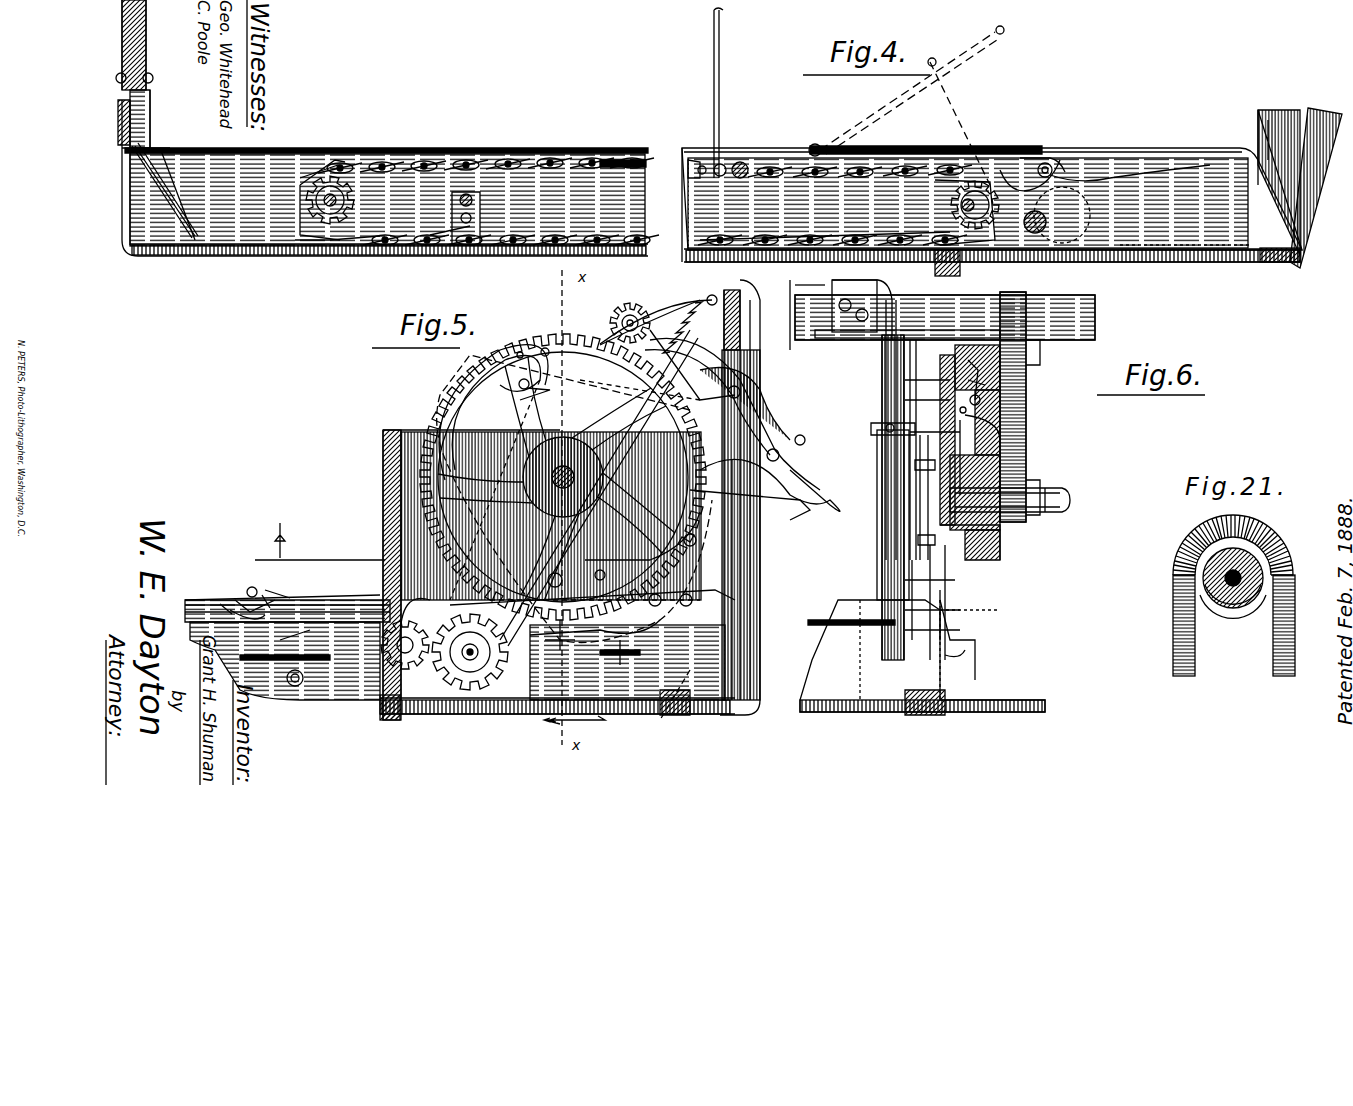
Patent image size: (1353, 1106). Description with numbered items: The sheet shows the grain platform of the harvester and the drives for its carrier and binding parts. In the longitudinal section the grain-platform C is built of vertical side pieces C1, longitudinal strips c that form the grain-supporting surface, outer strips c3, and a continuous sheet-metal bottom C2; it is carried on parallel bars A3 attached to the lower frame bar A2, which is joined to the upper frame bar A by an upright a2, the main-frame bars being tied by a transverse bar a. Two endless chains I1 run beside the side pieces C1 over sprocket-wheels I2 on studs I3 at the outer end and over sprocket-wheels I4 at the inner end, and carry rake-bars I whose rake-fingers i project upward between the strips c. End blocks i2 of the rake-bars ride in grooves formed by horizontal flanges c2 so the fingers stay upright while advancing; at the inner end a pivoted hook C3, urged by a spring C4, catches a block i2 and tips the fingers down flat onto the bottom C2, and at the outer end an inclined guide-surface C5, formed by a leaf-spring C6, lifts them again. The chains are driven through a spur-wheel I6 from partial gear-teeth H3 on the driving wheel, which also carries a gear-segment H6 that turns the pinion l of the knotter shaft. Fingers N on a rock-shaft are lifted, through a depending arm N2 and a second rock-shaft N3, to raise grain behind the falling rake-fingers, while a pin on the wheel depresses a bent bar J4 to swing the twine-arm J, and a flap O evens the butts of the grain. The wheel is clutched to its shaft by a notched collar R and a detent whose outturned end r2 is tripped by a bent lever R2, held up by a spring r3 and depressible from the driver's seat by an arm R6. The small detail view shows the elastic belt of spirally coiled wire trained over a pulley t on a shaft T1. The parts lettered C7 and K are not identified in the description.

In FIG. 4, the vertical side pieces C1 is at (385, 178).
In FIG. 4, the parallel bars A3 is at (296, 250).
In FIG. 5, the parallel bars A3 is at (535, 718).
In FIG. 4, the transverse bar a is at (118, 138).
In FIG. 4, the leaf-spring C6 is at (158, 148).
In FIG. 6, the leaf-spring C6 is at (1008, 688).
In FIG. 4, the inclined guide-surface C5 is at (280, 225).
In FIG. 4, the sprocket-wheels I2 is at (327, 200).
In FIG. 4, the outer strips c3 is at (520, 158).
In FIG. 4, the longitudinal strips c is at (477, 215).
In FIG. 4, the rake-bars I is at (465, 218).
In FIG. 4, the grain-platform C is at (386, 174).
In FIG. 5, the grain-platform C is at (557, 670).
In FIG. 4, the endless chains I1 is at (592, 164).
In FIG. 4, the right trough body C7 is at (1185, 160).
In FIG. 4, the third bar A2 is at (1192, 268).
In FIG. 4, the upright a2 is at (1300, 188).
In FIG. 4, the rake-fingers i is at (968, 112).
In FIG. 4, the fingers N is at (882, 110).
In FIG. 4, the end blocks i2 is at (742, 162).
In FIG. 4, the pivoted hook C3 is at (790, 160).
In FIG. 4, the horizontal flanges c2 is at (832, 216).
In FIG. 4, the sprocket-wheels I4 is at (945, 215).
In FIG. 4, the studs I3 is at (1042, 272).
In FIG. 4, the spring C4 is at (1020, 163).
In FIG. 4, the horizontal bottom C2 is at (1185, 223).
In FIG. 5, the frame K is at (542, 575).
In FIG. 5, the notched collar R is at (563, 477).
In FIG. 6, the notched collar R is at (1030, 535).
In FIG. 5, the bent lever R2 is at (575, 488).
In FIG. 5, the gear-teeth H3 is at (600, 338).
In FIG. 5, the gear-segment H6 is at (503, 412).
In FIG. 5, the pinion l is at (625, 315).
In FIG. 5, the spring r3 is at (667, 339).
In FIG. 5, the frame bar A is at (758, 354).
In FIG. 6, the frame bar A is at (868, 340).
In FIG. 5, the arm R6 is at (752, 445).
In FIG. 5, the twine-arm J is at (592, 551).
In FIG. 5, the rock-shaft N3 is at (610, 667).
In FIG. 5, the spur-wheel I6 is at (458, 728).
In FIG. 5, the depending arm N2 is at (306, 571).
In FIG. 6, the flap O is at (910, 590).
In FIG. 6, the outturned end r2 is at (876, 500).
In FIG. 6, the bent bar J4 is at (988, 648).
In FIG. 21, the shaft T1 is at (1173, 612).
In FIG. 21, the pulley t is at (1285, 580).